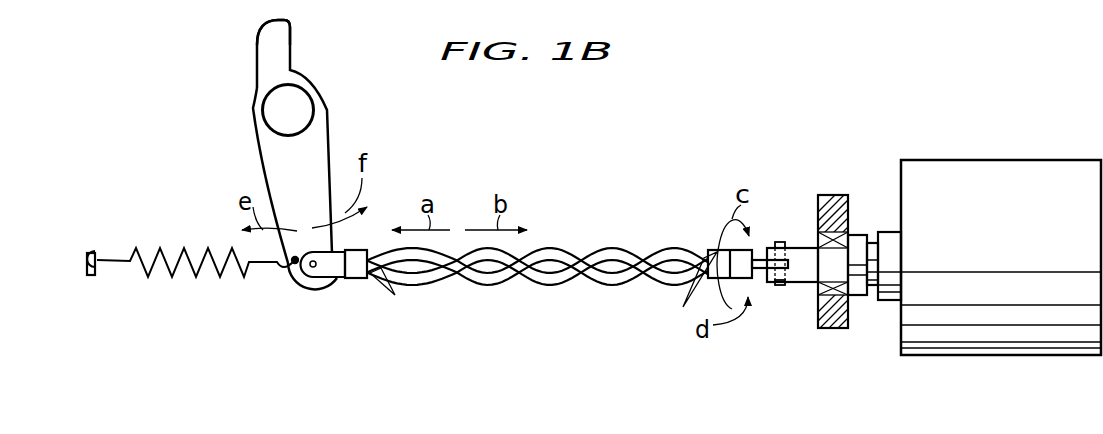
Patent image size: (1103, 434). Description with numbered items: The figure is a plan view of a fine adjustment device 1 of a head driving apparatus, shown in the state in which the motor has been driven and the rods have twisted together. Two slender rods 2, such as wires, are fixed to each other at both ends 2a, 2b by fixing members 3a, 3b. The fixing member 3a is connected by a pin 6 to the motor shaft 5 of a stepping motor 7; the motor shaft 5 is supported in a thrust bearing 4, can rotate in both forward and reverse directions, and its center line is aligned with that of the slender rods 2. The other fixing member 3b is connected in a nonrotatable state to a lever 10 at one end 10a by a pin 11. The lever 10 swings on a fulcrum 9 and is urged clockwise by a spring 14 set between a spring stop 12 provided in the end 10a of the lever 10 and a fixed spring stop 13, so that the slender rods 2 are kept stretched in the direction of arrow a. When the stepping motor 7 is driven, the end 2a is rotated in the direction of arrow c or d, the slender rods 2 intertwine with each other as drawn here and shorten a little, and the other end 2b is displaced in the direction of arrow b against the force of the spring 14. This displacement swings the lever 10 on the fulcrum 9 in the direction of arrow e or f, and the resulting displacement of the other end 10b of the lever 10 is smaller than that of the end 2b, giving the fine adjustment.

The fine adjustment device 1 is at (688, 193).
The slender rods 2 is at (612, 272).
The one end of the slender rods 2a is at (683, 291).
The other end of the slender rods 2b is at (397, 299).
The fixing member 3a is at (753, 280).
The fixing member 3b is at (358, 280).
The thrust bearing 4 is at (817, 250).
The motor shaft 5 is at (842, 263).
The pin 6 is at (785, 240).
The stepping motor 7 is at (1005, 170).
The fulcrum 9 is at (278, 118).
The lever 10 is at (277, 162).
The one end of the lever 10a is at (300, 281).
The other end of the lever 10b is at (270, 40).
The pin 11 is at (315, 278).
The spring stop 12 is at (288, 273).
The fixed spring stop 13 is at (90, 279).
The spring 14 is at (188, 280).